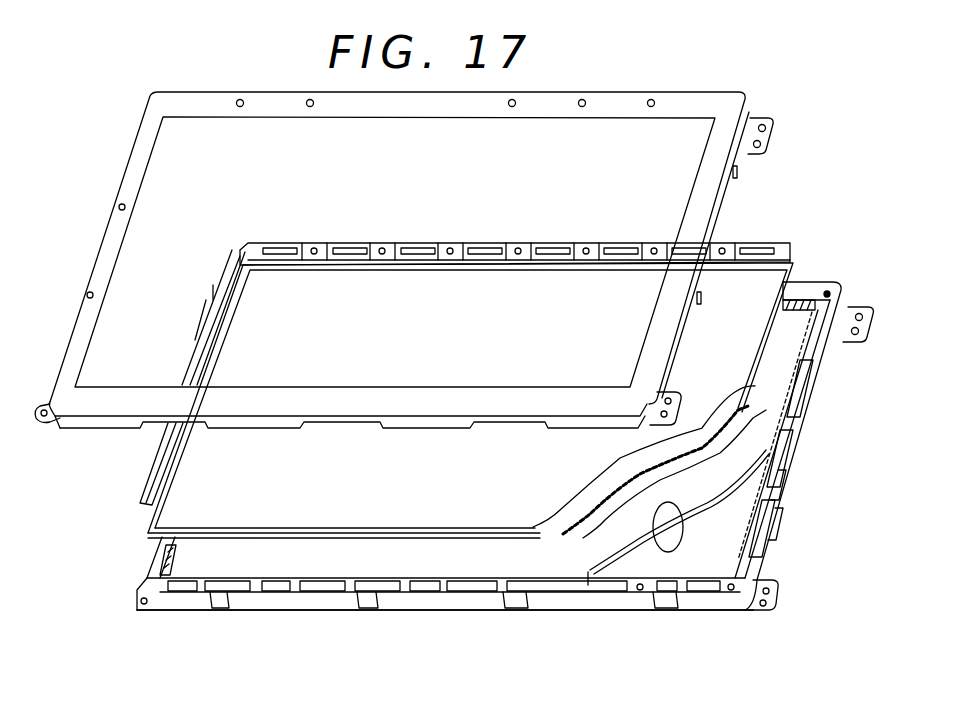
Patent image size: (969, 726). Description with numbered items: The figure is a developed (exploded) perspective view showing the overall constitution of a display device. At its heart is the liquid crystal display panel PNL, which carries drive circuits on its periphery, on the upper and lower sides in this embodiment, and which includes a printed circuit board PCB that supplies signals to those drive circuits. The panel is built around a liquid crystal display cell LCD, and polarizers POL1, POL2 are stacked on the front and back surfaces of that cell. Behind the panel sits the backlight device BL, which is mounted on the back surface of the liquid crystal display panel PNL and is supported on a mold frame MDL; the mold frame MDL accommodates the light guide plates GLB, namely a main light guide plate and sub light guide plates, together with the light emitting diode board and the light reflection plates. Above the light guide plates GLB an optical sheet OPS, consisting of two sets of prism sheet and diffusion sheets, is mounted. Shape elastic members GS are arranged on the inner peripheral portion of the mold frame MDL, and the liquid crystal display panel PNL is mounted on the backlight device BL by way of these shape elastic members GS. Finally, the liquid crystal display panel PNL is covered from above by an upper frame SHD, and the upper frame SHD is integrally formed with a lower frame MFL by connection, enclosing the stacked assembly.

The upper frame SHD is at (737, 102).
The liquid crystal display panel PNL is at (746, 224).
The printed circuit board PCB is at (452, 243).
The shape elastic members GS is at (797, 308).
The mold frame MDL is at (772, 473).
The lower frame MFL is at (770, 538).
The polarizer POL2 is at (470, 515).
The liquid crystal cell LCD is at (552, 527).
The polarizer POL1 is at (580, 530).
The optical sheet OPS is at (668, 552).
The light guide plates GLB is at (700, 565).
The backlight device BL is at (306, 622).